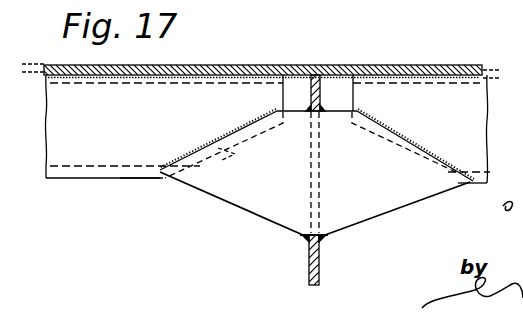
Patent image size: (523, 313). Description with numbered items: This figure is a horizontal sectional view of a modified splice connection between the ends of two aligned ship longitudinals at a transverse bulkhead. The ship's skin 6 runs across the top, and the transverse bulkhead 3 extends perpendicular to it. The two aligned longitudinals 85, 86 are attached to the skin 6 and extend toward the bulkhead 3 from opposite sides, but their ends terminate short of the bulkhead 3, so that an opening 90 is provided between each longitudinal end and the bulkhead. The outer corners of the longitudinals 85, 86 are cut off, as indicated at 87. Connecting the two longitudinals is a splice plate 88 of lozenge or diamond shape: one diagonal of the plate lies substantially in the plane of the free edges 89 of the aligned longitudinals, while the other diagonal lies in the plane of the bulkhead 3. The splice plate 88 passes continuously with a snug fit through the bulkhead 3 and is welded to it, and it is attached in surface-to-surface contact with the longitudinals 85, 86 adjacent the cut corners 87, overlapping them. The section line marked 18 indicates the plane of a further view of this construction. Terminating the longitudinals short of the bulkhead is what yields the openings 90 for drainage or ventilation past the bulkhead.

The ship's skin 6 is at (218, 72).
The longitudinal 85 is at (52, 117).
The longitudinal 86 is at (480, 119).
The opening 90 is at (287, 104).
The cut-off corner 87 is at (222, 137).
The splice plate 88 is at (243, 206).
The transverse bulkhead 3 is at (309, 262).
The free edge 89 is at (118, 176).
The section line for FIG. 18 is at (522, 187).